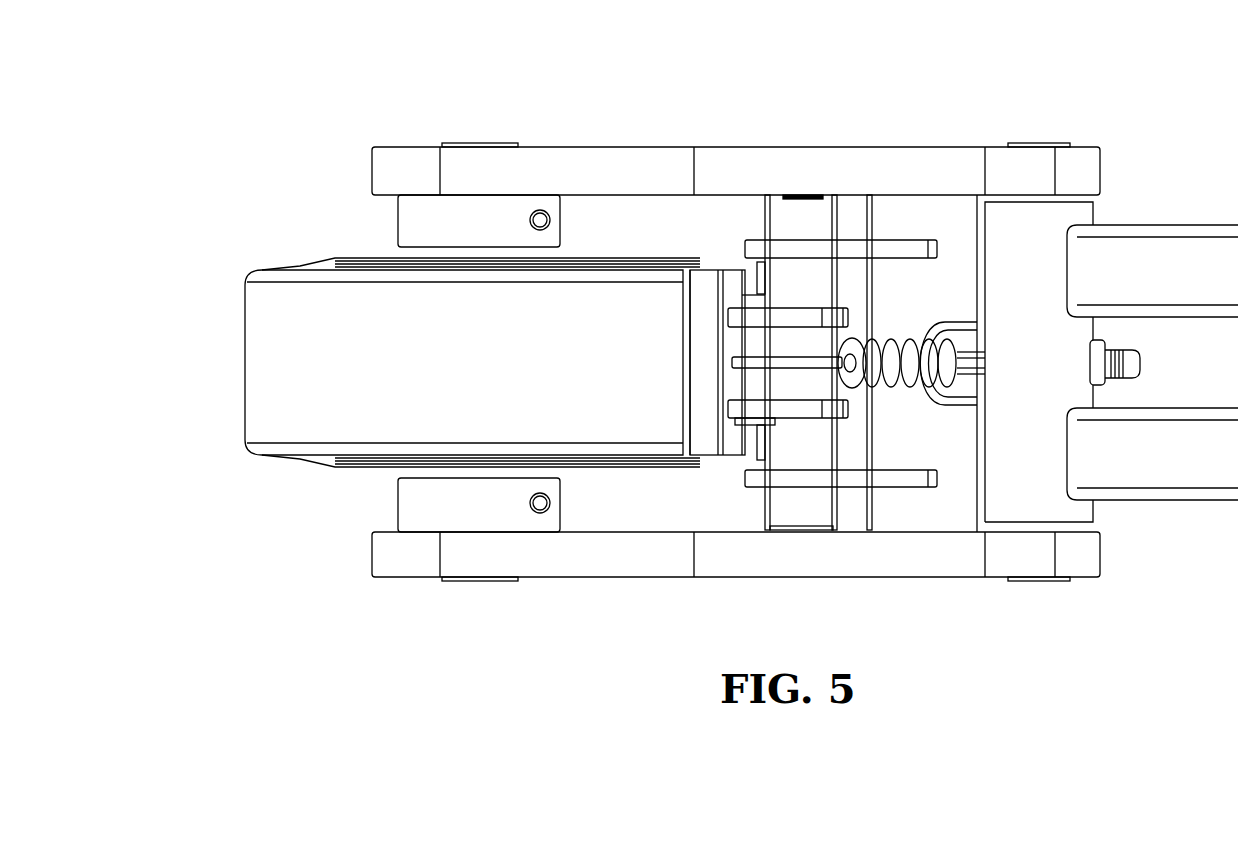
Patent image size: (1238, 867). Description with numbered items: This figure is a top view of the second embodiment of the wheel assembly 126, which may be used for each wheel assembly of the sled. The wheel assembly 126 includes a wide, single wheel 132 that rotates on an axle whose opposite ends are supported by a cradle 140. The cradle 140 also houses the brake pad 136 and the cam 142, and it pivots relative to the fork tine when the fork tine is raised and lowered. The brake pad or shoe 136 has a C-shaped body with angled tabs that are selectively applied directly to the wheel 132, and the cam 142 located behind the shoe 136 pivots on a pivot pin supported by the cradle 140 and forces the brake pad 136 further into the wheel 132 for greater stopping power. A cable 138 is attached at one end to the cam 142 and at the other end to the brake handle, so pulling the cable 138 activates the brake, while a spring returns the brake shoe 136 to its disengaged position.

The wheel assembly 126 is at (396, 92).
The wheel 132 is at (300, 266).
The brake pad 136 is at (730, 270).
The cable 138 is at (800, 357).
The cradle 140 is at (593, 146).
The cam 142 is at (785, 310).